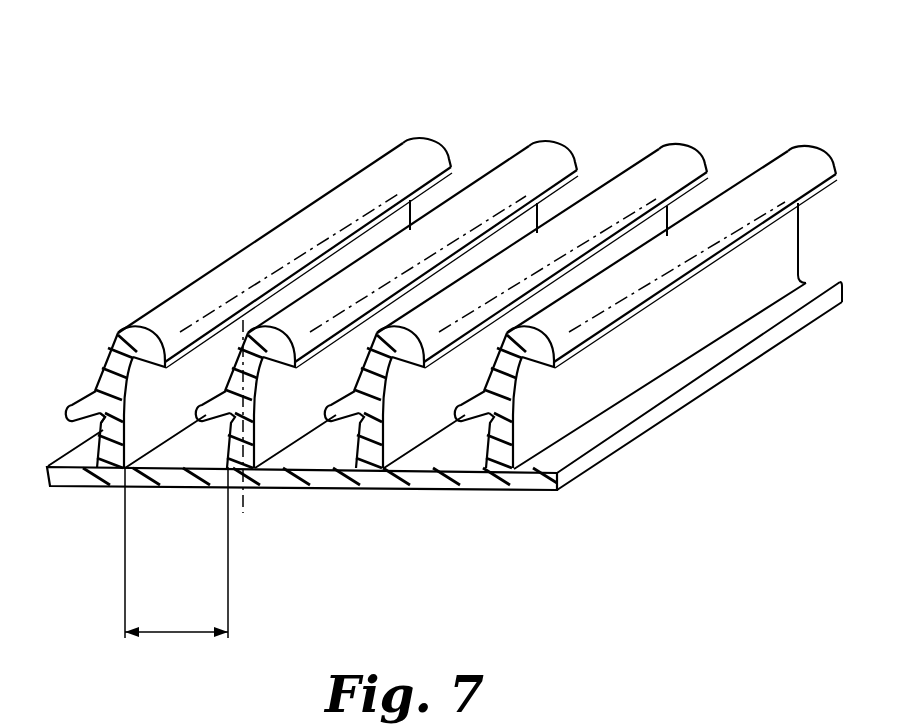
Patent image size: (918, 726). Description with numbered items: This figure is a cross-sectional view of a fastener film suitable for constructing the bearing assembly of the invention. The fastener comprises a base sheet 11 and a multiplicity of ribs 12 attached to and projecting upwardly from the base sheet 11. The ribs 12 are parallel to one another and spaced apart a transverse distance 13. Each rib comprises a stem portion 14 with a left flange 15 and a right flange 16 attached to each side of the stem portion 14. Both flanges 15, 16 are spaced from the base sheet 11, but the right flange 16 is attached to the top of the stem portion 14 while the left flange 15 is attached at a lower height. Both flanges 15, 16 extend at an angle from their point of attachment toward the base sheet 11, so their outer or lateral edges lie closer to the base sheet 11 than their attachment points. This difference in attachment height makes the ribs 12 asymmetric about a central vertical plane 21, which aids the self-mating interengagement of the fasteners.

The base sheet 11 is at (63, 473).
The ribs 12 is at (541, 157).
The transverse distance 13 is at (168, 630).
The stem portion 14 is at (103, 420).
The left flange 15 is at (88, 398).
The right flange 16 is at (188, 337).
The central vertical plane 21 is at (244, 499).